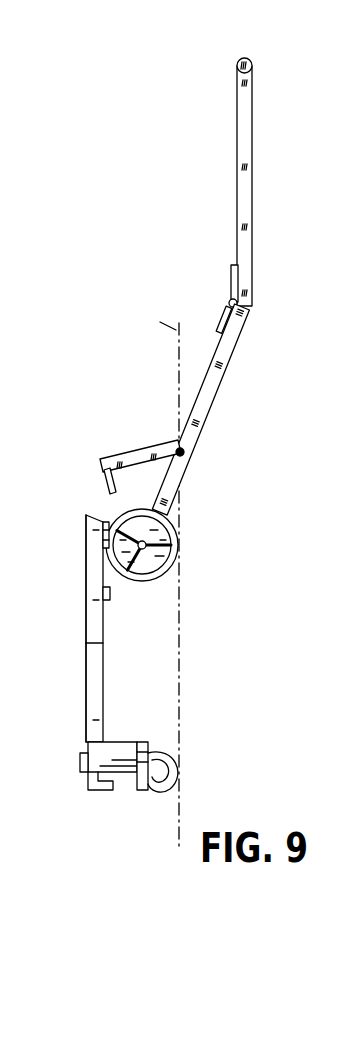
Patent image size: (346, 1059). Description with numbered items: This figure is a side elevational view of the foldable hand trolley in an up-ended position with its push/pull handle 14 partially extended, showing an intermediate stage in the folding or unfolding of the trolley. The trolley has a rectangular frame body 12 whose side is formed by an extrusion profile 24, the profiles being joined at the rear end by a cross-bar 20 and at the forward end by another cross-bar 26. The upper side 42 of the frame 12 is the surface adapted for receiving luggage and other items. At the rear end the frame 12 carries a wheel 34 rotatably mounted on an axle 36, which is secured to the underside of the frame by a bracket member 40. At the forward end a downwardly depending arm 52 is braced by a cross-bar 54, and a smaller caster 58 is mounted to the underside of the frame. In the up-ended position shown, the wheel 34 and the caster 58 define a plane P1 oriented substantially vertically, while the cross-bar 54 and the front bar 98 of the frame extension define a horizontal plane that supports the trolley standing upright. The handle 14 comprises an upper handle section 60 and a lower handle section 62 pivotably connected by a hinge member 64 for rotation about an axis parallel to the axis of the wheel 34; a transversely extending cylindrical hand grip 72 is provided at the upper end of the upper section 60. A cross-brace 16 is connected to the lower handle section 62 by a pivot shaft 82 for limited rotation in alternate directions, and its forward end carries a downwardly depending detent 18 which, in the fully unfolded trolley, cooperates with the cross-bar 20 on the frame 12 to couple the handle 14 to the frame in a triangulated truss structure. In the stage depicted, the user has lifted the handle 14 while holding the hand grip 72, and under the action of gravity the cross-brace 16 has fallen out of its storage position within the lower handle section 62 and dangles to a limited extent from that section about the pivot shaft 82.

The frame body 12 is at (75, 621).
The push/pull handle 14 is at (198, 286).
The cross-brace 16 is at (140, 453).
The detent 18 is at (100, 488).
The cross-bar 20 is at (108, 597).
The extrusion profile 24 is at (87, 562).
The cross-bar 26 is at (80, 758).
The wheel 34 is at (178, 543).
The axle 36 is at (163, 560).
The bracket member 40 is at (102, 525).
The upper side 42 is at (87, 660).
The downwardly depending arm 52 is at (132, 773).
The cross-bar 54 is at (142, 790).
The caster 58 is at (175, 757).
The upper handle section 60 is at (240, 150).
The lower handle section 62 is at (221, 375).
The hinge member 64 is at (229, 303).
The hand grip 72 is at (237, 68).
The pivot shaft 82 is at (178, 450).
The front bar 98 is at (100, 795).
The plane P1 is at (152, 305).